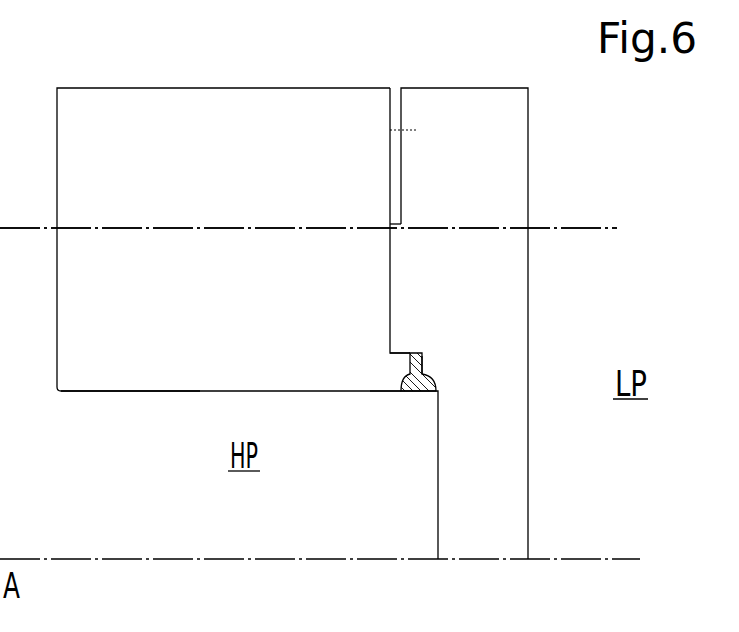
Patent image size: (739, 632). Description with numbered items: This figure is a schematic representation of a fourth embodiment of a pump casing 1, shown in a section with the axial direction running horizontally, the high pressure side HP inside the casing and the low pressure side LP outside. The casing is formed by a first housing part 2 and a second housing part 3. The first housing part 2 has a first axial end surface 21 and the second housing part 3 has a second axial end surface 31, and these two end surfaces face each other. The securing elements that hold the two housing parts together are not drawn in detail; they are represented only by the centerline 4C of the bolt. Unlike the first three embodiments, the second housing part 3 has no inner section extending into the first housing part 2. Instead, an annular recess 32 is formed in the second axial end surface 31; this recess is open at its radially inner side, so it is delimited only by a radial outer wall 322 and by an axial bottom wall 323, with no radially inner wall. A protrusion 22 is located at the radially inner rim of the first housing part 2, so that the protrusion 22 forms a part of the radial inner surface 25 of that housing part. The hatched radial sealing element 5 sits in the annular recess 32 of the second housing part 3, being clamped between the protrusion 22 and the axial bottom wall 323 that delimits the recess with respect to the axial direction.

The pump casing 1 is at (653, 121).
The first housing part 2 is at (181, 99).
The second housing part 3 is at (502, 100).
The radial sealing element 5 is at (414, 392).
The first axial end surface 21 is at (392, 130).
The protrusion 22 is at (392, 392).
The radial inner surface 25 is at (152, 391).
The second axial end surface 31 is at (398, 181).
The annular recess 32 is at (421, 354).
The radial outer wall 322 is at (403, 355).
The axial bottom wall 323 is at (423, 366).
The centerline 4C is at (605, 228).